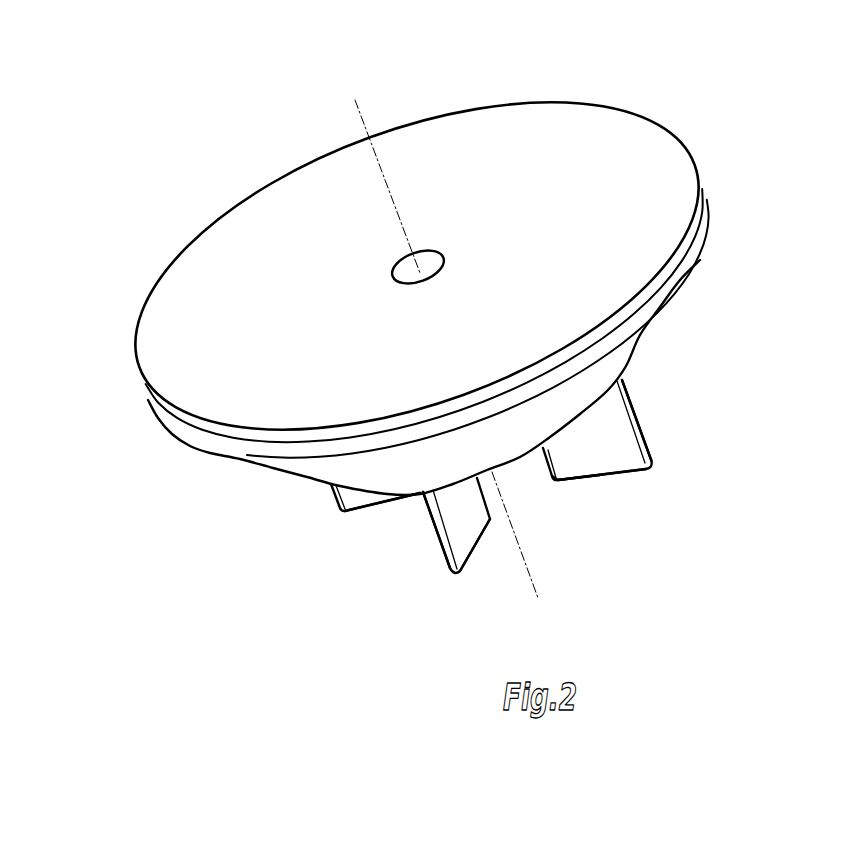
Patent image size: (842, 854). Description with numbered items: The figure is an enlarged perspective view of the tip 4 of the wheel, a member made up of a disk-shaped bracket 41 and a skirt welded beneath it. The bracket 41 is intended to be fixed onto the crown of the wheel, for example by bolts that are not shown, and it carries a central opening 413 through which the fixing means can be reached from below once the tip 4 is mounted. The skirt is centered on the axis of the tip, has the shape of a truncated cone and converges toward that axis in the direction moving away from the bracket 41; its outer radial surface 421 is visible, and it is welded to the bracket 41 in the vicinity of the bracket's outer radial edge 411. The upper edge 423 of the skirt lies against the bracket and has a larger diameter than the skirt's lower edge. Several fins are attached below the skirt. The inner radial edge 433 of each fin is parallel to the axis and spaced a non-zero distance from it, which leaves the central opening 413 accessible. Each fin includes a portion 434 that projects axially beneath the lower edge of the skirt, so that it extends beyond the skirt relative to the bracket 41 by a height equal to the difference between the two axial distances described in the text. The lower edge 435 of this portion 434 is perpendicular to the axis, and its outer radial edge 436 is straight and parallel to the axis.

The tip 4 is at (190, 191).
The disk-shaped bracket 41 is at (563, 148).
The outer radial edge 411 is at (712, 220).
The central opening 413 is at (405, 270).
The outer radial surface 421 is at (383, 464).
The upper edge 423 is at (640, 340).
The inner radial edge 433 is at (481, 491).
The portion 434 is at (622, 440).
The lower edge 435 is at (577, 484).
The outer radial edge 436 is at (645, 430).